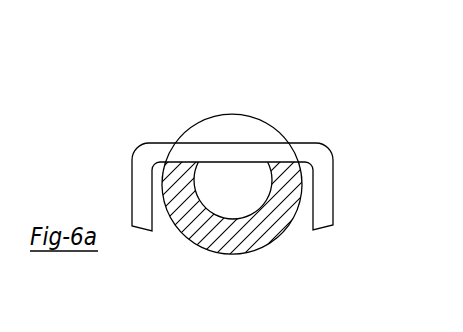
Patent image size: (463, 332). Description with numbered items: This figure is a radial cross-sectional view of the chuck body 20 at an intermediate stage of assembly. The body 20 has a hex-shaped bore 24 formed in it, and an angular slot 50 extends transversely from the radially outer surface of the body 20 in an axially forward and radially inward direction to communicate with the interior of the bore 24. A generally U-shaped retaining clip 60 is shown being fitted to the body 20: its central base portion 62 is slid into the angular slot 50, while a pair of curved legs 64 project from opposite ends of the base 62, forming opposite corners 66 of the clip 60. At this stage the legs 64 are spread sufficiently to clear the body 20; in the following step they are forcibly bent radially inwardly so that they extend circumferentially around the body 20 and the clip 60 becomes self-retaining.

The body 20 is at (278, 237).
The hex bore 24 is at (268, 194).
The angular slot 50 is at (245, 128).
The retaining clip 60 is at (170, 145).
The central base portion 62 is at (204, 146).
The curved legs 64 is at (147, 190).
The corners 66 is at (143, 147).